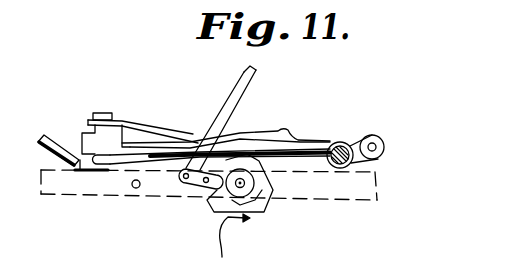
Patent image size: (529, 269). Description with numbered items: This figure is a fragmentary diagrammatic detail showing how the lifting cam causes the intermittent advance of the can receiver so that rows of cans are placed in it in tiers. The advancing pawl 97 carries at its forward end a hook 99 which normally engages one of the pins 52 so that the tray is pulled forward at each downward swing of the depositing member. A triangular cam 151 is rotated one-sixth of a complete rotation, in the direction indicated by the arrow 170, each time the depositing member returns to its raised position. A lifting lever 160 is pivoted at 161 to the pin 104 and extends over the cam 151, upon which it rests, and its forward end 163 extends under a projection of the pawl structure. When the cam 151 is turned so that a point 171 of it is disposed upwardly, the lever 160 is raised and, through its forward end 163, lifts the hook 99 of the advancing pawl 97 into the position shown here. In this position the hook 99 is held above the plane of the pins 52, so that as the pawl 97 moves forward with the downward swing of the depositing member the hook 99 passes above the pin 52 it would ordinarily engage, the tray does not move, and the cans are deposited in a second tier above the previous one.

The pin 52 is at (136, 188).
The pawl 97 is at (287, 126).
The hook 99 is at (80, 167).
The pin 104 is at (384, 154).
The triangular cam 151 is at (262, 209).
The lifting lever 160 is at (297, 148).
The pivot 161 is at (353, 166).
The forward end 163 is at (91, 121).
The arrow 170 is at (238, 241).
The point 171 is at (238, 133).